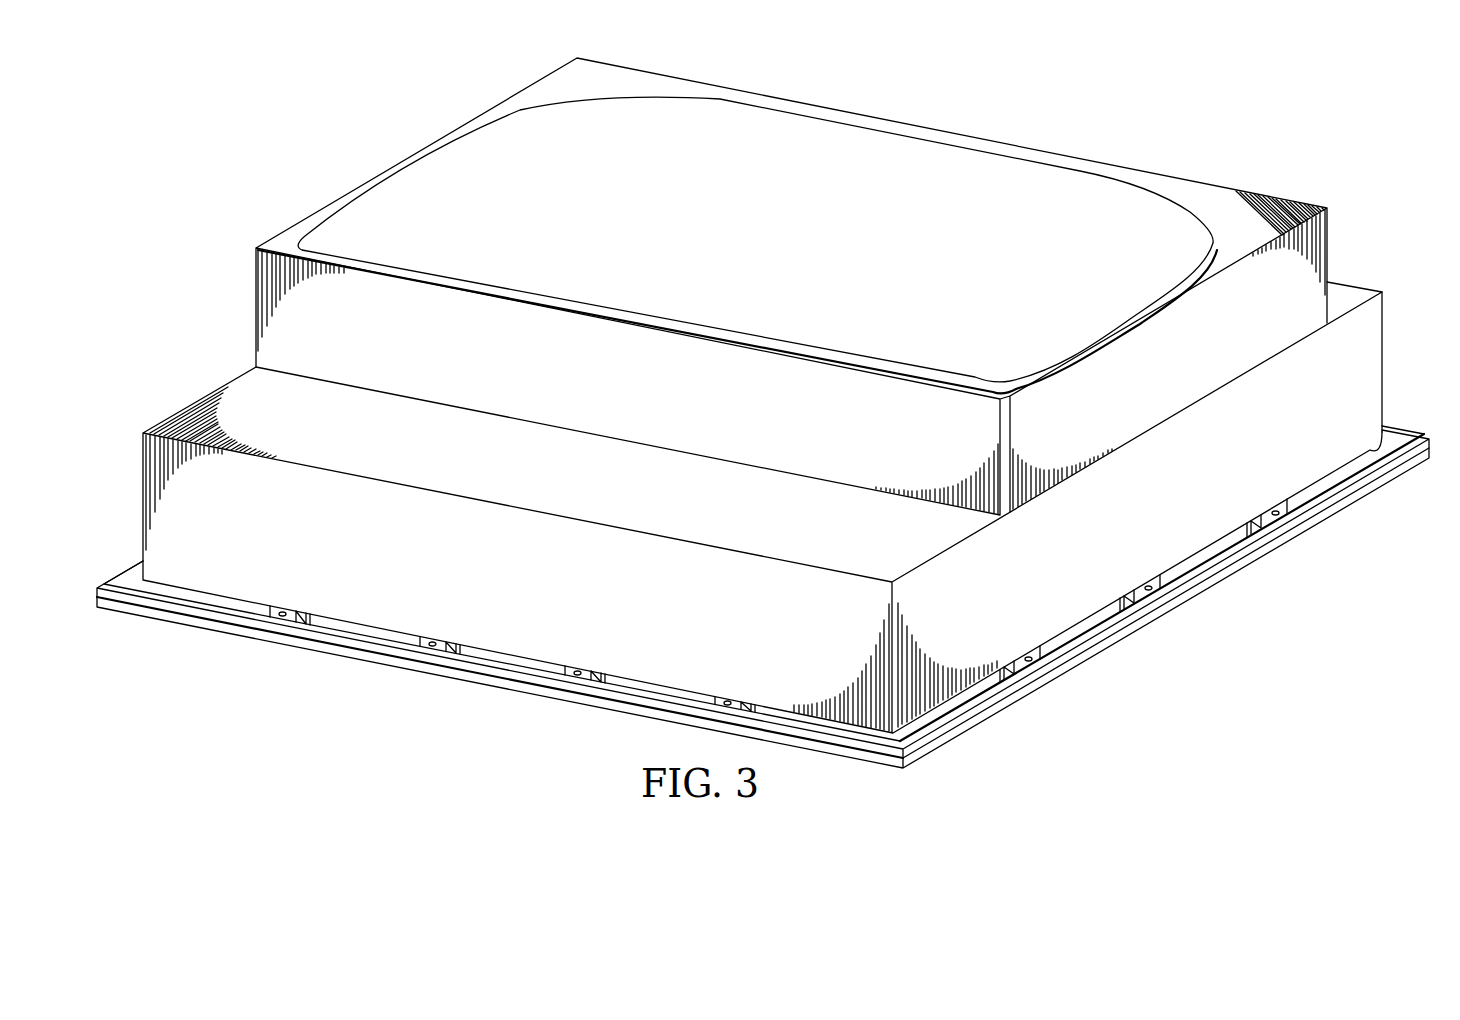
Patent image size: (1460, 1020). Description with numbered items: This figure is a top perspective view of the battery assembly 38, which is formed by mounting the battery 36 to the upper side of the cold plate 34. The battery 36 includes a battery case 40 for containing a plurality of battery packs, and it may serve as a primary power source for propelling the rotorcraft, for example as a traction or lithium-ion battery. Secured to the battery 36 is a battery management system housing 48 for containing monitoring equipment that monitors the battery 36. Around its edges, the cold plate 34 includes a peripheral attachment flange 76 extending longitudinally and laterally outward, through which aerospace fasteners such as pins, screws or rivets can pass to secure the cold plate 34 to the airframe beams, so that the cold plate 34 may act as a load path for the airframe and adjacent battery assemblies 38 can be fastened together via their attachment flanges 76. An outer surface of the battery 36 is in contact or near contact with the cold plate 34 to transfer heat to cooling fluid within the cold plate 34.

The cold plate 34 is at (115, 566).
The battery 36 is at (1396, 314).
The battery assembly 38 is at (386, 112).
The battery case 40 is at (1376, 361).
The battery management system housing 48 is at (1207, 192).
The peripheral attachment flange 76 is at (217, 621).